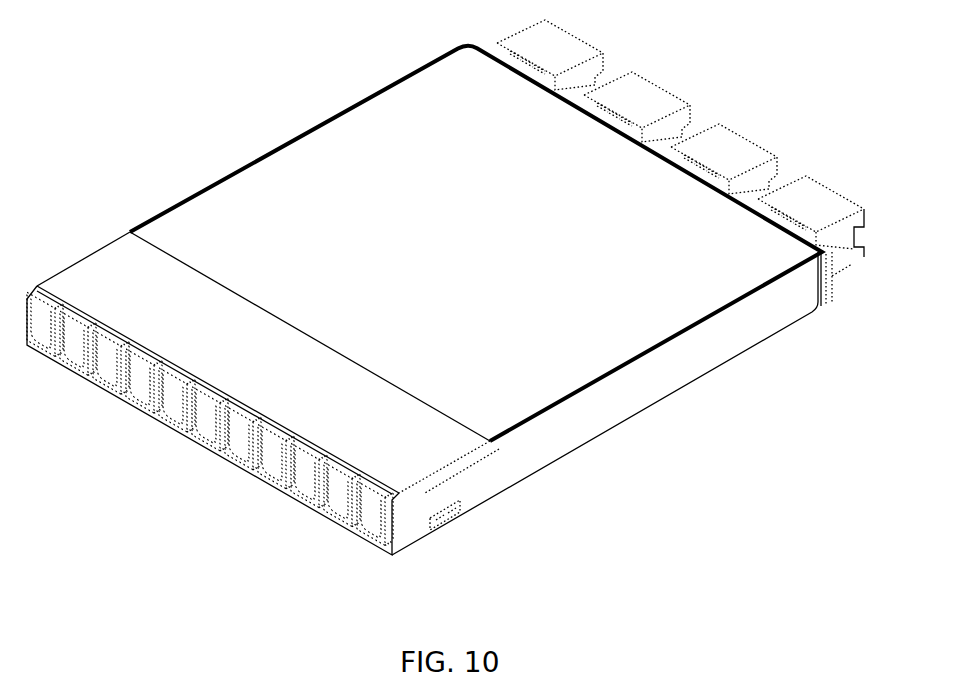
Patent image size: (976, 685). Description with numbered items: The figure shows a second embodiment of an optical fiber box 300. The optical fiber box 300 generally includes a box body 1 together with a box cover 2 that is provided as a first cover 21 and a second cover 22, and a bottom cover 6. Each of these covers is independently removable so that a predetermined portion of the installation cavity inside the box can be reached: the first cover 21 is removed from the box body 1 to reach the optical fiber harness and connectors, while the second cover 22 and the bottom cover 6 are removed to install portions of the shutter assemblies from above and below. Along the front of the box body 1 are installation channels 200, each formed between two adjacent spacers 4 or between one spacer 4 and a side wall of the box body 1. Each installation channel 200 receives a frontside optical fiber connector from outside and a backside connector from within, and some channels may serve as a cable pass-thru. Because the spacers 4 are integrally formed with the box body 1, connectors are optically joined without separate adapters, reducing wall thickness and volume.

The optical fiber box 300 is at (288, 90).
The box body 1 is at (655, 387).
The box cover 2 is at (621, 499).
The first cover 21 is at (495, 403).
The second cover 22 is at (445, 457).
The spacer 4 is at (190, 413).
The installation channel 200 is at (138, 393).
The bottom cover 6 is at (425, 527).